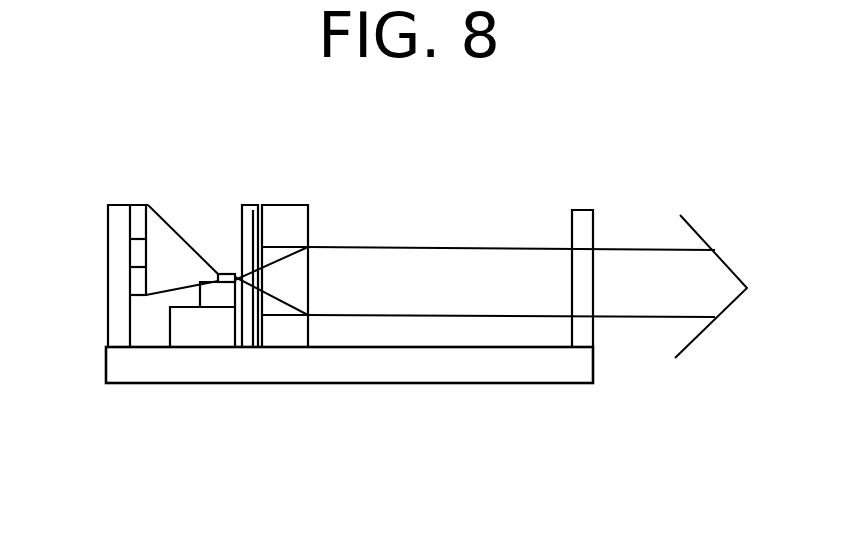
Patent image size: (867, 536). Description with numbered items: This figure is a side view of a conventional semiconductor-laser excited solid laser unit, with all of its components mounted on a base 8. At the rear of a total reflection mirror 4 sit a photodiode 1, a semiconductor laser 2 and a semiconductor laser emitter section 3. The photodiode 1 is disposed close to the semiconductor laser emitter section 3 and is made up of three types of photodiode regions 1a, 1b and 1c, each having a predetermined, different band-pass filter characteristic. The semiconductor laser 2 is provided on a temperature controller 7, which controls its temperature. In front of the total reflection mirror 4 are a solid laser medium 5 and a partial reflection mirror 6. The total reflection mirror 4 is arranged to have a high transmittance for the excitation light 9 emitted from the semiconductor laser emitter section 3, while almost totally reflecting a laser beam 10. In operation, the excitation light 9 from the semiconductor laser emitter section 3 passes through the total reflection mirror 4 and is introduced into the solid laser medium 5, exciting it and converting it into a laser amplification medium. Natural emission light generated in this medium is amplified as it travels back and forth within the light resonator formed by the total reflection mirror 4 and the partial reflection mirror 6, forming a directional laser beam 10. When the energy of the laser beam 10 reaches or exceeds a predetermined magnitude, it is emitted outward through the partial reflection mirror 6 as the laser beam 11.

The photodiode 1 is at (129, 200).
The photodiode region 1a is at (136, 218).
The photodiode region 1b is at (136, 253).
The photodiode region 1c is at (136, 282).
The semiconductor laser 2 is at (210, 293).
The semiconductor laser emitter section 3 is at (232, 272).
The total reflection mirror 4 is at (252, 217).
The solid laser medium 5 is at (288, 220).
The partial reflection mirror 6 is at (580, 228).
The temperature controller 7 is at (197, 327).
The base 8 is at (393, 358).
The excitation light 9 is at (278, 303).
The laser beam 10 is at (432, 248).
The laser beam 11 is at (652, 250).